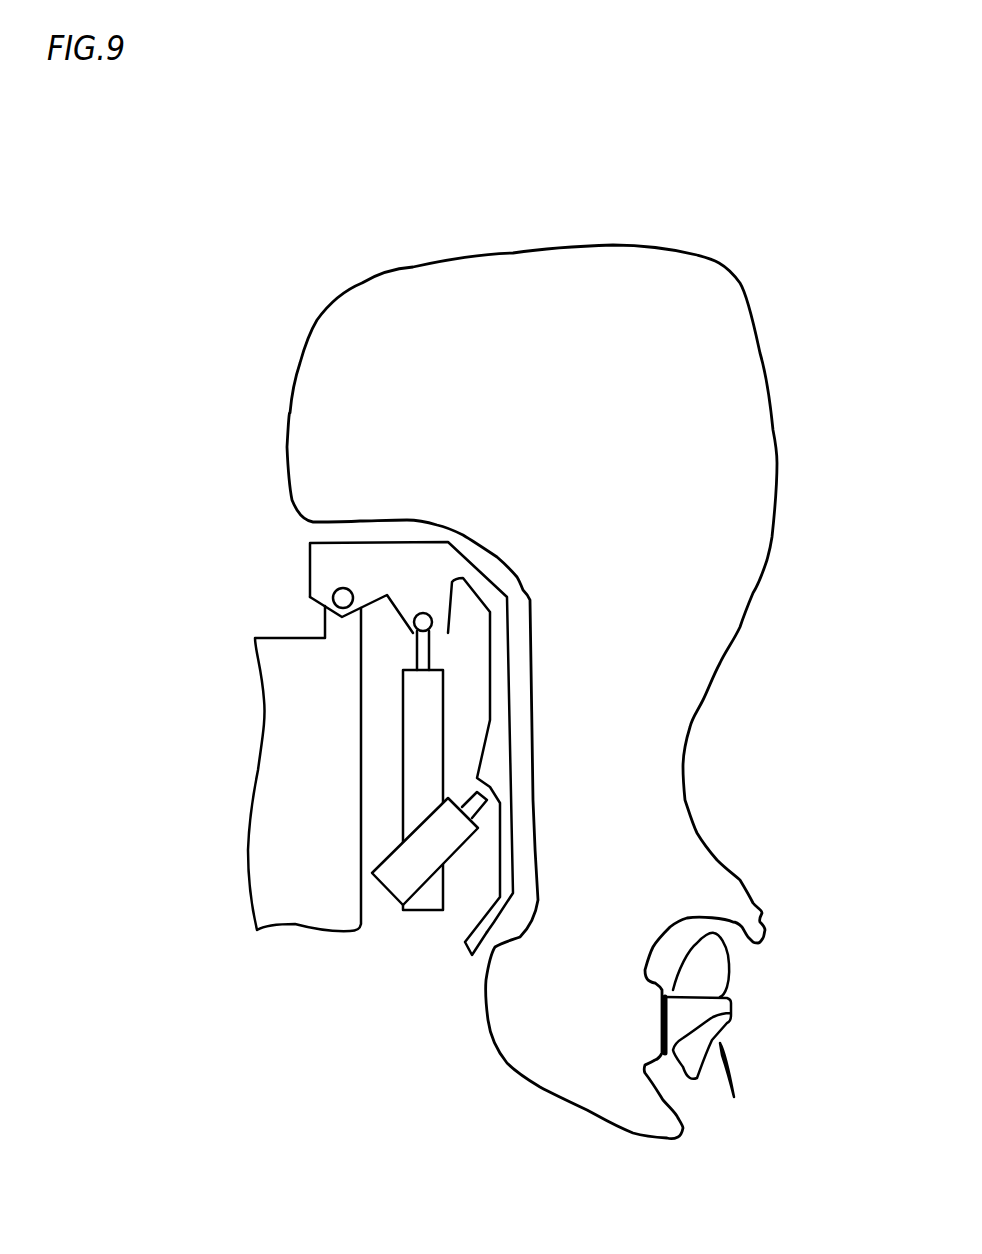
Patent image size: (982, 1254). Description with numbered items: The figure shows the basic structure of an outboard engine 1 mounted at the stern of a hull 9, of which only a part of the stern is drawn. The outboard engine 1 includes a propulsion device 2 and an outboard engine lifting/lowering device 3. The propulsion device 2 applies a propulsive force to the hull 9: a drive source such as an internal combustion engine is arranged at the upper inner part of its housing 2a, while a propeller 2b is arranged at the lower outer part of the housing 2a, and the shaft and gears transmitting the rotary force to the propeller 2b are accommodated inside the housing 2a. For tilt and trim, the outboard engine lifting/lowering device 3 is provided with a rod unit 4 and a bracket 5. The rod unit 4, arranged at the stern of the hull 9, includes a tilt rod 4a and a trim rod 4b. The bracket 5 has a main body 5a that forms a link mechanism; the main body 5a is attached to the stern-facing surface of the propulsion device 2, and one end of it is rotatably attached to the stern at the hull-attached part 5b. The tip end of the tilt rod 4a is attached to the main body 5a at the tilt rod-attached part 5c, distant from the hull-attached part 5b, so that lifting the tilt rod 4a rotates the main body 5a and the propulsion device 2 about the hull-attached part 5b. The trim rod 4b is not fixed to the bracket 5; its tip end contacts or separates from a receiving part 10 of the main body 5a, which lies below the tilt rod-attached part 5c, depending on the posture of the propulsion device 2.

The outboard engine 1 is at (807, 192).
The propulsion device 2 is at (798, 322).
The housing 2a is at (770, 387).
The propeller 2b is at (763, 1015).
The outboard engine lifting/lowering device 3 is at (408, 960).
The rod unit 4 is at (397, 920).
The tilt rod 4a is at (415, 657).
The trim rod 4b is at (477, 797).
The bracket 5 is at (295, 553).
The main body 5a is at (487, 930).
The hull-attached part 5b is at (334, 597).
The tilt rod-attached part 5c is at (414, 622).
The hull 9 is at (267, 622).
The receiving part 10 is at (493, 790).